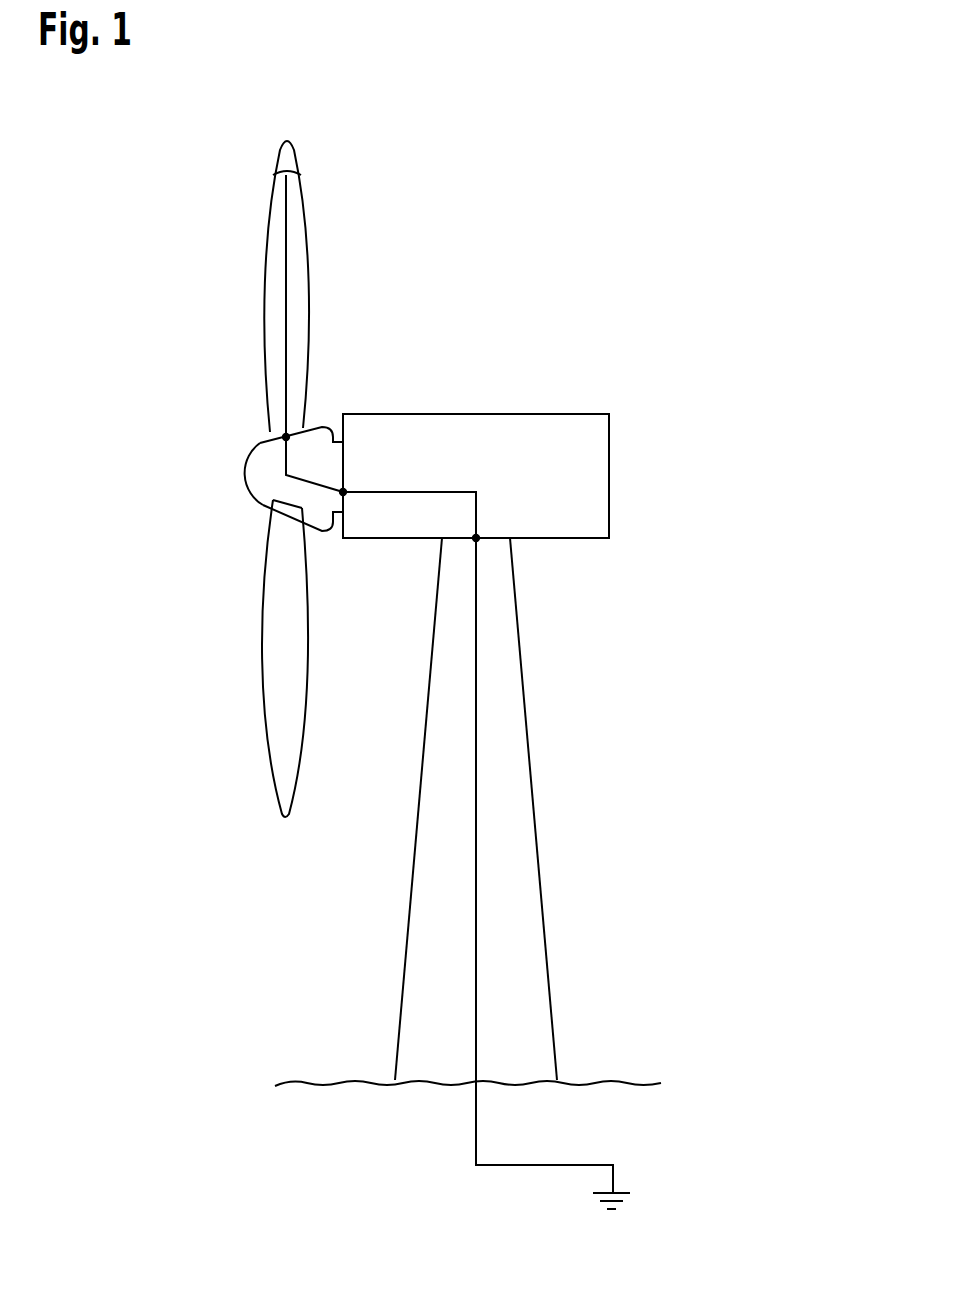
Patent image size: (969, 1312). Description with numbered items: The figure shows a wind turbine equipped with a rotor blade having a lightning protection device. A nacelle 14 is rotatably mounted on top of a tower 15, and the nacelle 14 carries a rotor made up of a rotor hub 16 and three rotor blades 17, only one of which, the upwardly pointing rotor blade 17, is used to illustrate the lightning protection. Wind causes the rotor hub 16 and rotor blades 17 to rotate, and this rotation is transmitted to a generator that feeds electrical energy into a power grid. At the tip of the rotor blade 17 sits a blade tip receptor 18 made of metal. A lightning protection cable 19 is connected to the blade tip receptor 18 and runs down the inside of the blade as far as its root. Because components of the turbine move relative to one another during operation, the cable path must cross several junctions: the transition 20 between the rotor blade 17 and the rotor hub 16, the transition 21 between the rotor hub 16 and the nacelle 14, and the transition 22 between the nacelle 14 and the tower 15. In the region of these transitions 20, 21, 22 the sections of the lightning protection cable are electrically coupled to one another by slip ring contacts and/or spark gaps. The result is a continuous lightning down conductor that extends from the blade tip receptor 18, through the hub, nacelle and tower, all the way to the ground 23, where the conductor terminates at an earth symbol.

The nacelle 14 is at (538, 414).
The tower 15 is at (528, 737).
The rotor hub 16 is at (245, 473).
The rotor blade 17 is at (308, 257).
The blade tip receptor 18 is at (287, 137).
The lightning protection cable 19 is at (285, 293).
The transition between rotor blade and rotor hub 20 is at (284, 434).
The transition between rotor hub and nacelle 21 is at (343, 492).
The transition between nacelle and tower 22 is at (476, 538).
The ground 23 is at (620, 1190).